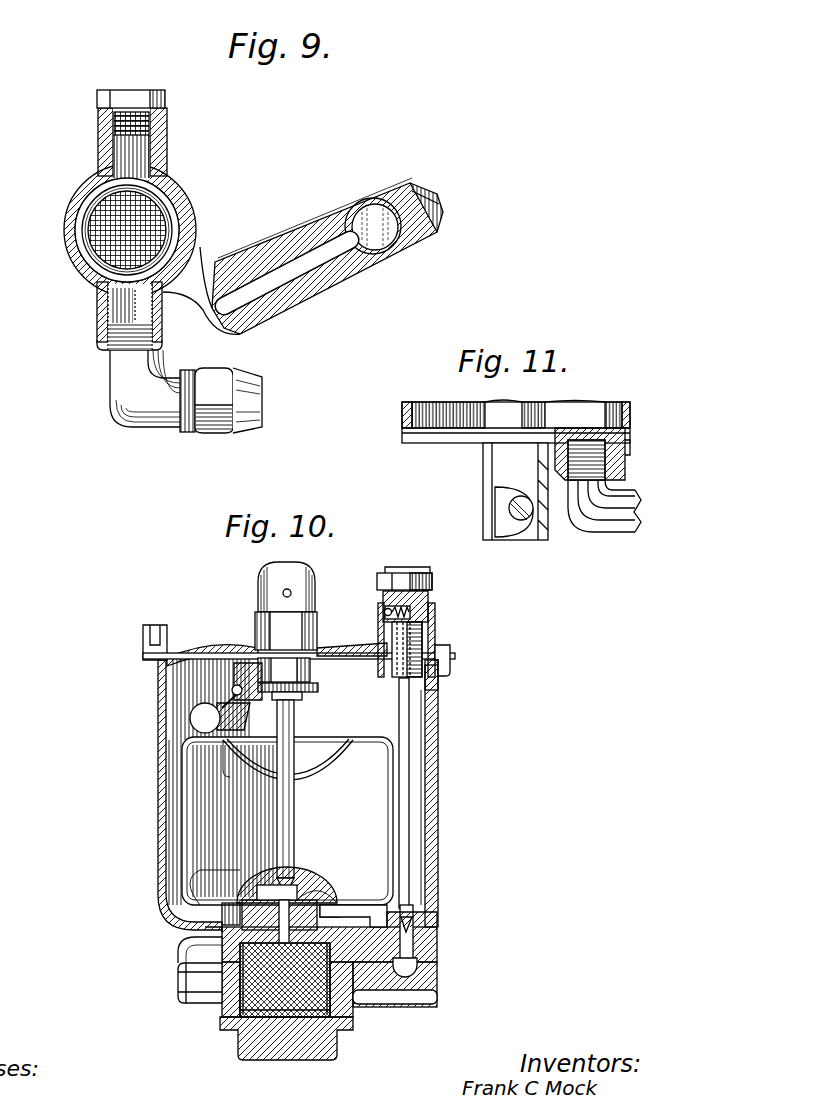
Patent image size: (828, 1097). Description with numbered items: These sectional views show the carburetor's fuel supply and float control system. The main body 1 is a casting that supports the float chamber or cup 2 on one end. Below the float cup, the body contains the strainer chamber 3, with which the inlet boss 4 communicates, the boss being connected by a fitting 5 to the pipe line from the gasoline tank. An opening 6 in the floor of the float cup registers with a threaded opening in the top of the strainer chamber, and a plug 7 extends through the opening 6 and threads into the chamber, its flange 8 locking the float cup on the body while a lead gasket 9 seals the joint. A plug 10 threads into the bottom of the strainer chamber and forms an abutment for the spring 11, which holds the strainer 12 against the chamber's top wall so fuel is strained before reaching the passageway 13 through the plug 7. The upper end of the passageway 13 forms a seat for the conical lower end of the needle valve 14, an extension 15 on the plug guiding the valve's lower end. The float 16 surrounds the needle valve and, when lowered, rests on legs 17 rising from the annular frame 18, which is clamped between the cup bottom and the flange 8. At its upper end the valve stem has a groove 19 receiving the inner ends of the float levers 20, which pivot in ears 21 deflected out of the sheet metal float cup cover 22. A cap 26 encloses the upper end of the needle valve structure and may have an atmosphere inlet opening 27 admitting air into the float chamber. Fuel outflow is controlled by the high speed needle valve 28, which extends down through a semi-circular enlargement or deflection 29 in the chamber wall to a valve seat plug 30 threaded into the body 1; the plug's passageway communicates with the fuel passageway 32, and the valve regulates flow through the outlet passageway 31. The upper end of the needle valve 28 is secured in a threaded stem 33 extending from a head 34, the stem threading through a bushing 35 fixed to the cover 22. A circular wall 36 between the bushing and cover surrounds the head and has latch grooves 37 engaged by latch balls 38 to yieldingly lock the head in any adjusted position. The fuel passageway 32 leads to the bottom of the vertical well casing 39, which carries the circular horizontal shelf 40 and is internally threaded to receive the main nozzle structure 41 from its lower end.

In FIG. 9, the main body 1 is at (210, 258).
In FIG. 10, the main body 1 is at (440, 994).
In FIG. 10, the float chamber or cup 2 is at (158, 715).
In FIG. 9, the strainer chamber 3 is at (178, 205).
In FIG. 10, the strainer chamber 3 is at (180, 970).
In FIG. 9, the inlet boss 4 is at (97, 334).
In FIG. 9, the fitting 5 is at (112, 398).
In FIG. 10, the fitting 5 is at (186, 946).
In FIG. 10, the opening 6 is at (343, 912).
In FIG. 10, the plug 7 is at (222, 933).
In FIG. 10, the flange 8 is at (321, 903).
In FIG. 10, the gasket 9 is at (436, 926).
In FIG. 10, the plug 10 is at (284, 1060).
In FIG. 9, the spring 11 is at (85, 232).
In FIG. 10, the spring 11 is at (232, 1037).
In FIG. 9, the strainer 12 is at (97, 249).
In FIG. 10, the strainer 12 is at (262, 1043).
In FIG. 10, the passageway 13 is at (290, 912).
In FIG. 10, the needle valve 14 is at (296, 735).
In FIG. 10, the extension 15 is at (253, 876).
In FIG. 10, the float 16 is at (355, 744).
In FIG. 10, the legs 17 is at (222, 912).
In FIG. 10, the annular frame 18 is at (352, 912).
In FIG. 10, the groove 19 is at (334, 650).
In FIG. 10, the float levers 20 is at (218, 712).
In FIG. 10, the ears 21 is at (238, 656).
In FIG. 10, the float cup cover 22 is at (192, 650).
In FIG. 10, the cap 26 is at (280, 568).
In FIG. 10, the atmosphere inlet opening 27 is at (283, 594).
In FIG. 10, the high speed needle valve 28 is at (409, 730).
In FIG. 10, the semi-circular enlargement or deflection 29 is at (437, 782).
In FIG. 10, the valve seat plug 30 is at (428, 946).
In FIG. 10, the outlet passageway 31 is at (418, 958).
In FIG. 9, the fuel passageway 32 is at (306, 272).
In FIG. 10, the fuel passageway 32 is at (420, 972).
In FIG. 10, the threaded stem 33 is at (420, 628).
In FIG. 10, the head 34 is at (433, 580).
In FIG. 10, the bushing 35 is at (450, 662).
In FIG. 10, the circular wall 36 is at (384, 615).
In FIG. 10, the latch grooves 37 is at (430, 605).
In FIG. 10, the latch balls 38 is at (382, 608).
In FIG. 9, the vertical well casing 39 is at (367, 204).
In FIG. 11, the vertical well casing 39 is at (526, 404).
In FIG. 11, the circular horizontal shelf 40 is at (440, 443).
In FIG. 11, the main nozzle structure 41 is at (625, 427).